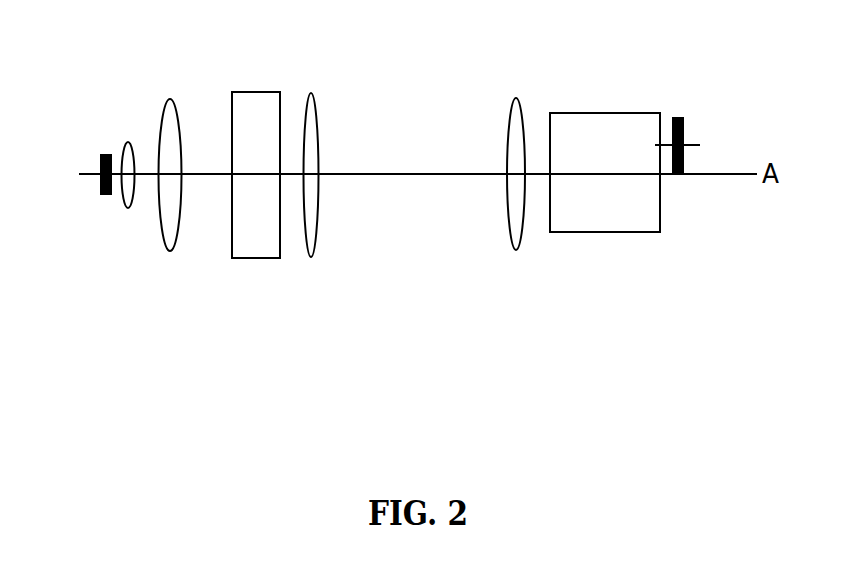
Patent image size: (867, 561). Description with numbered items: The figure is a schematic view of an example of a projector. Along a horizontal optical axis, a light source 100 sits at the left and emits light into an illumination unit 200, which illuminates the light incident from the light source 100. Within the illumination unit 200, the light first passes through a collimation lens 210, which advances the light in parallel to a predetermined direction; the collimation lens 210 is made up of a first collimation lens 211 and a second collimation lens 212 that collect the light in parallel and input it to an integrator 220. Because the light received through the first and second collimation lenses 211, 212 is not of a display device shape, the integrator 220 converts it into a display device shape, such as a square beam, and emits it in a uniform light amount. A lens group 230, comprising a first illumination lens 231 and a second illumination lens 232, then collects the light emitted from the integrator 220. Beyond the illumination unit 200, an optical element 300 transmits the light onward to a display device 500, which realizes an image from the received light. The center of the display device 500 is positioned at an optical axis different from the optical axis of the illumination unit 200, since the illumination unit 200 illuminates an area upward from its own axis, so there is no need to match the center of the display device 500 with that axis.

The light source 100 is at (100, 156).
The illumination unit 200 is at (301, 267).
The collimation lens 210 is at (138, 244).
The first collimation lens 211 is at (126, 208).
The second collimation lens 212 is at (168, 252).
The integrator 220 is at (265, 256).
The lens group 230 is at (415, 238).
The first illumination lens 231 is at (311, 257).
The second illumination lens 232 is at (516, 250).
The optical element 300 is at (602, 217).
The display device 500 is at (678, 118).